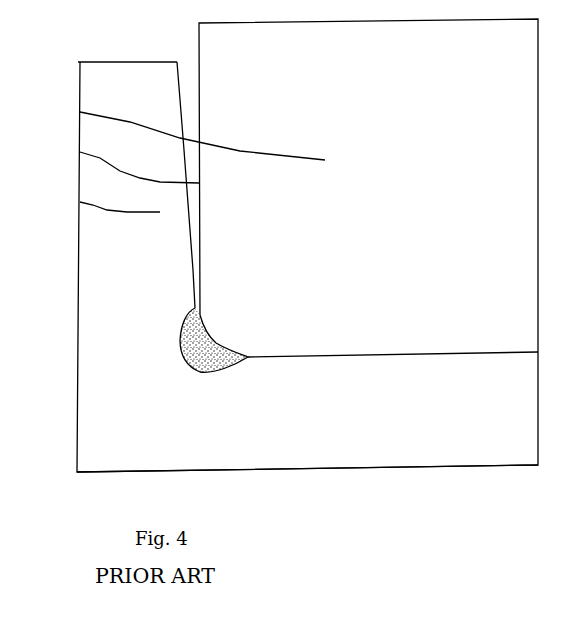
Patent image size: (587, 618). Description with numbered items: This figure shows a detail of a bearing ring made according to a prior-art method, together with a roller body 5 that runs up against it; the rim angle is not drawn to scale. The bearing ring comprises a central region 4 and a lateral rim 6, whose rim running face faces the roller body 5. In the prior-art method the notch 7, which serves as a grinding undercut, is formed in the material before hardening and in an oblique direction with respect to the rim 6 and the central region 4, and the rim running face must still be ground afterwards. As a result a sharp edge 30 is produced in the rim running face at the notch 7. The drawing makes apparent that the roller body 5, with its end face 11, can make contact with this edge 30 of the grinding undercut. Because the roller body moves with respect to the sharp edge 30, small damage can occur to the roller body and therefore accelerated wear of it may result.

The central region 4 is at (255, 421).
The roller body 5 is at (80, 112).
The lateral rim 6 is at (80, 202).
The notch 7 is at (193, 335).
The end face of the roller body 11 is at (80, 152).
The edge 30 is at (193, 300).